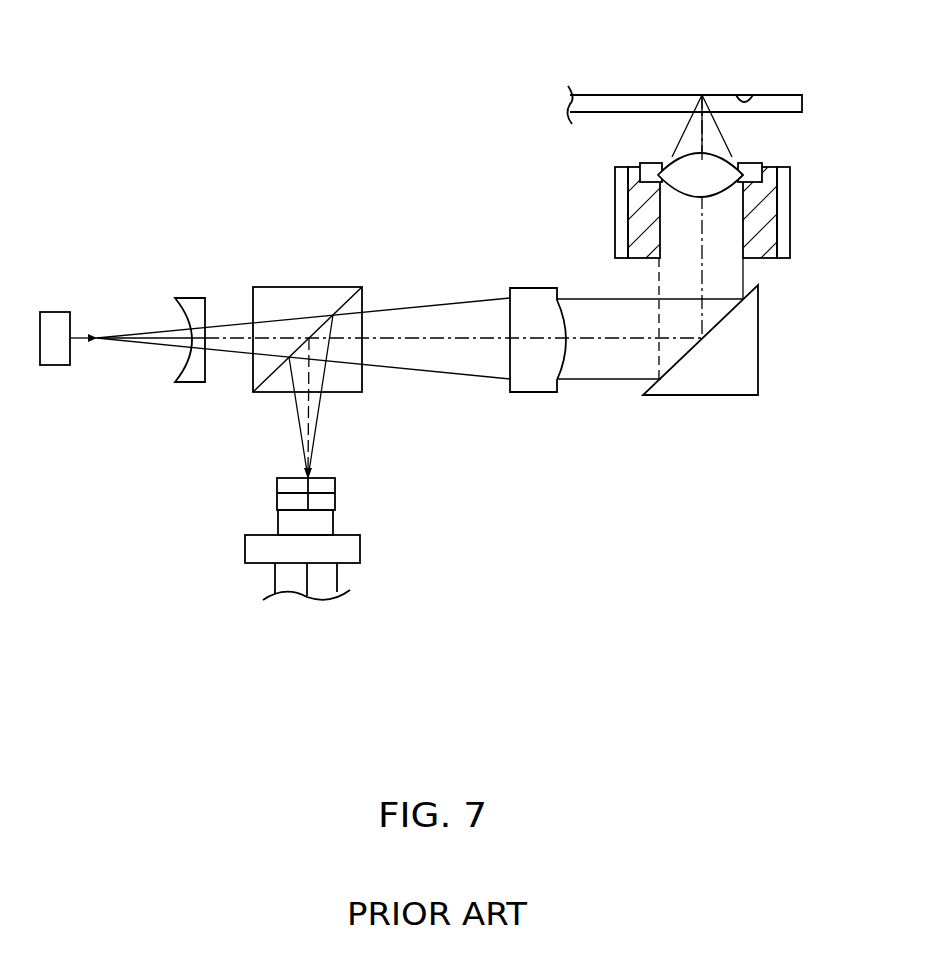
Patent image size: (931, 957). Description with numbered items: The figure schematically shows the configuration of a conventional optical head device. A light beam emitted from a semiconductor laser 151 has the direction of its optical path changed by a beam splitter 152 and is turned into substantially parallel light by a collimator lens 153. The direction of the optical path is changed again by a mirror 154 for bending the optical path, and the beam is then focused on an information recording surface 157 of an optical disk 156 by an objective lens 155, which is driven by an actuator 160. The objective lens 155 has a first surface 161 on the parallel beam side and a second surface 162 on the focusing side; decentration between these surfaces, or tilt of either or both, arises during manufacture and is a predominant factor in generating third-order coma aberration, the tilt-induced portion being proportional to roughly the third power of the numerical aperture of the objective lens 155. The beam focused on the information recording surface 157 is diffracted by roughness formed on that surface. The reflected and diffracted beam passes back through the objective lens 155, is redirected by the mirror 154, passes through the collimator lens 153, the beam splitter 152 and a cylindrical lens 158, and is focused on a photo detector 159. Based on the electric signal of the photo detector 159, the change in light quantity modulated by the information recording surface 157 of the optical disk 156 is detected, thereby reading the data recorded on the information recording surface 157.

The semiconductor laser 151 is at (350, 552).
The beam splitter 152 is at (323, 305).
The collimator lens 153 is at (535, 293).
The mirror for bending the optical path 154 is at (752, 363).
The objective lens 155 is at (757, 160).
The optical disk 156 is at (793, 95).
The information recording surface 157 is at (733, 95).
The cylindrical lens 158 is at (195, 307).
The photo detector 159 is at (57, 325).
The actuator 160 is at (770, 212).
The first surface 161 is at (630, 199).
The second surface 162 is at (688, 150).